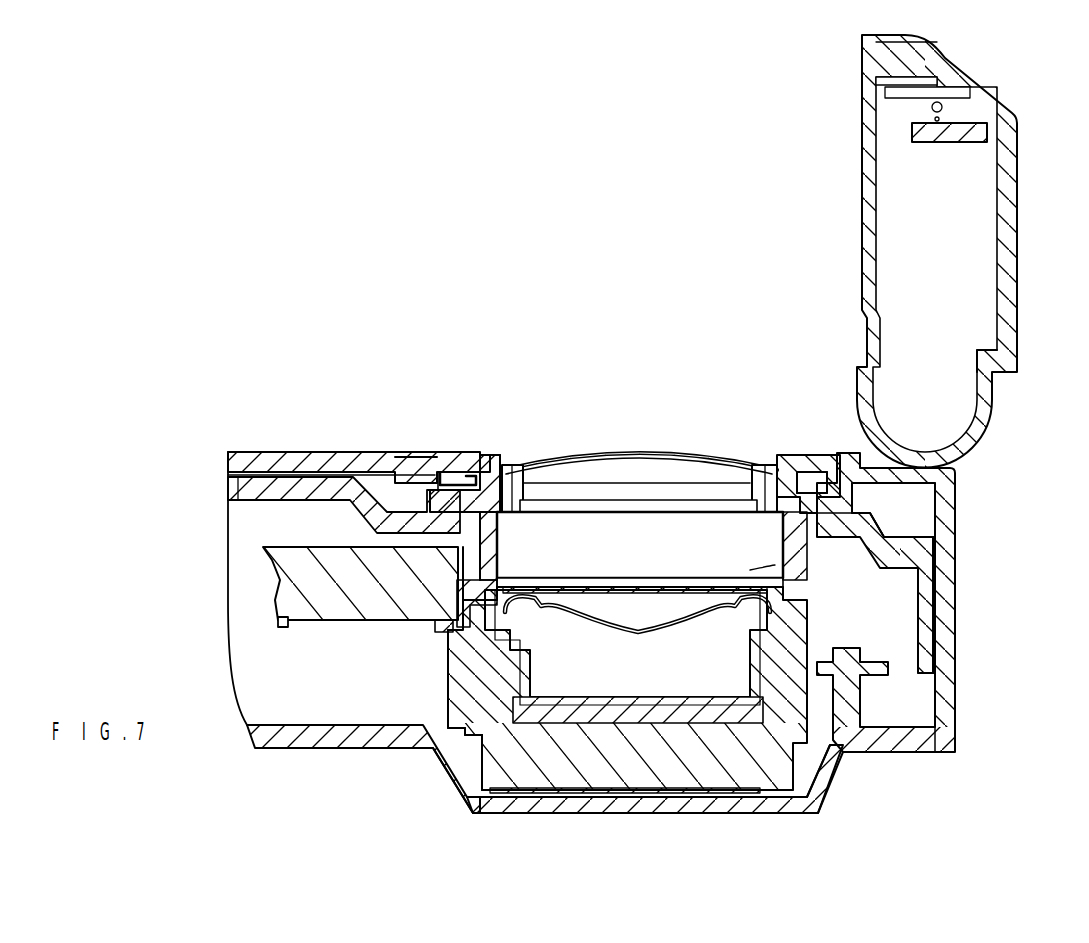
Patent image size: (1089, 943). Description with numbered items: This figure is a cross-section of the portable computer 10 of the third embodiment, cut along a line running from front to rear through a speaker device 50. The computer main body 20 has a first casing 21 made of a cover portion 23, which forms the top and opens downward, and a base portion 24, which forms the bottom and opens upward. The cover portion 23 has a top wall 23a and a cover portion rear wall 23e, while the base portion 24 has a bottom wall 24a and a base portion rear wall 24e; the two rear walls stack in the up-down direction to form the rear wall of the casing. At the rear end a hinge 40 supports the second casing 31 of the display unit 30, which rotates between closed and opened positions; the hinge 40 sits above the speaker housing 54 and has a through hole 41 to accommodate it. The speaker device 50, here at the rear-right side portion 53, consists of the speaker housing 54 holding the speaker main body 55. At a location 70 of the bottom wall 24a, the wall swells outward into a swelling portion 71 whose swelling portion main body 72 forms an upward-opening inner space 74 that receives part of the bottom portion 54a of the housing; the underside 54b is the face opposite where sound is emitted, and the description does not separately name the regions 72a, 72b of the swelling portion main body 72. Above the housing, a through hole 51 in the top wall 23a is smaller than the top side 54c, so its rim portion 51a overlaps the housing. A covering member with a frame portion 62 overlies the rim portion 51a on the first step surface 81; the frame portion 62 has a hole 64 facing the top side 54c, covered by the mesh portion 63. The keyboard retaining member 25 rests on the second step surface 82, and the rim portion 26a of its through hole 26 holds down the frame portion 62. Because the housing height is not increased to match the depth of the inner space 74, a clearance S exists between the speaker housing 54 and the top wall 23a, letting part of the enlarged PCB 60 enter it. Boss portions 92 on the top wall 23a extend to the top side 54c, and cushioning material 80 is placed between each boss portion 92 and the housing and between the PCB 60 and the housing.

The portable computer 10 is at (354, 428).
The computer main body 20 is at (237, 448).
The first casing 21 is at (321, 549).
The cover portion 23 is at (918, 603).
The top wall 23a is at (354, 428).
The cover portion rear wall 23e is at (957, 486).
The base portion 24 is at (918, 603).
The bottom wall 24a is at (275, 732).
The base portion rear wall 24e is at (952, 640).
The keyboard retaining member 25 is at (402, 453).
The through hole 26 is at (492, 453).
The rim portion 26a is at (463, 460).
The display unit 30 is at (1020, 221).
The second casing 31 is at (1015, 350).
The hinge 40 is at (236, 488).
The through hole 41 is at (510, 540).
The speaker device 50 is at (627, 723).
The through hole 51 is at (560, 480).
The rim portion 51a is at (540, 468).
The rear-right side portion 53 is at (428, 702).
The speaker housing 54 is at (652, 800).
The bottom portion 54a is at (628, 822).
The underside 54b is at (510, 800).
The top side 54c is at (643, 575).
The speaker main body 55 is at (718, 680).
The PCB 60 is at (290, 577).
The frame portion 62 is at (514, 488).
The mesh portion 63 is at (682, 458).
The hole 64 is at (655, 490).
The location 70 is at (838, 775).
The swelling portion 71 is at (832, 810).
The swelling portion main body 72 is at (628, 822).
The base plate lower surface 72a is at (680, 815).
The base plate upper surface 72b is at (748, 770).
The inner space 74 is at (448, 752).
The cushioning material 80 is at (528, 572).
The first step surface 81 is at (442, 468).
The second step surface 82 is at (434, 470).
The boss portion 92 is at (445, 600).
The clearance S is at (428, 640).